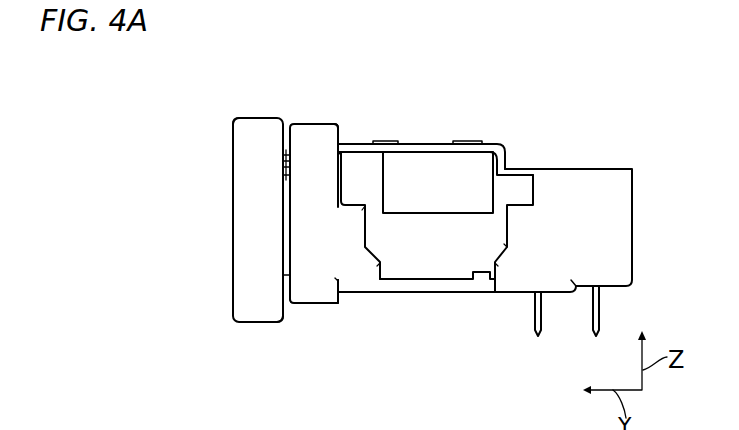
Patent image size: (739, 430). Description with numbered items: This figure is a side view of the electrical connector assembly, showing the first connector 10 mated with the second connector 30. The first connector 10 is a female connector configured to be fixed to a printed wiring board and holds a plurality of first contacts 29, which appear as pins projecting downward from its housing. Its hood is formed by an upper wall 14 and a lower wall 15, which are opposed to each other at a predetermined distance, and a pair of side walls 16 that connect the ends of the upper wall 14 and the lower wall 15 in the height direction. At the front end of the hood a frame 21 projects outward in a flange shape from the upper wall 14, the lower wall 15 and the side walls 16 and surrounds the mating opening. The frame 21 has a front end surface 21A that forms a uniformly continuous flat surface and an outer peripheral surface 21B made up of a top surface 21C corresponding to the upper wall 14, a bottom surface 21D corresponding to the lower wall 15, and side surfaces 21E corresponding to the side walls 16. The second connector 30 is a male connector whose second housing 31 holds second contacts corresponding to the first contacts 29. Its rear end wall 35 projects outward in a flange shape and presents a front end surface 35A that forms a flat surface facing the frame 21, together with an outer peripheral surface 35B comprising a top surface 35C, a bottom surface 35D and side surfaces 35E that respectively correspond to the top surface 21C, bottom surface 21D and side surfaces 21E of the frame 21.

The first connector 10 is at (534, 169).
The upper wall 14 is at (356, 144).
The lower wall 15 is at (420, 293).
The side walls 16 is at (437, 230).
The frame 21 is at (300, 124).
The front end surface 21A is at (280, 258).
The outer peripheral surface 21B is at (327, 124).
The top surface 21C is at (320, 124).
The bottom surface 21D is at (313, 303).
The side surfaces 21E is at (308, 237).
The first contacts 29 is at (541, 332).
The second connector 30 is at (203, 193).
The second housing 31 is at (233, 144).
The rear end wall 35 is at (257, 322).
The front end surface 35A is at (283, 305).
The outer peripheral surface 35B is at (258, 118).
The top surface 35C is at (243, 118).
The bottom surface 35D is at (275, 322).
The side surfaces 35E is at (248, 205).